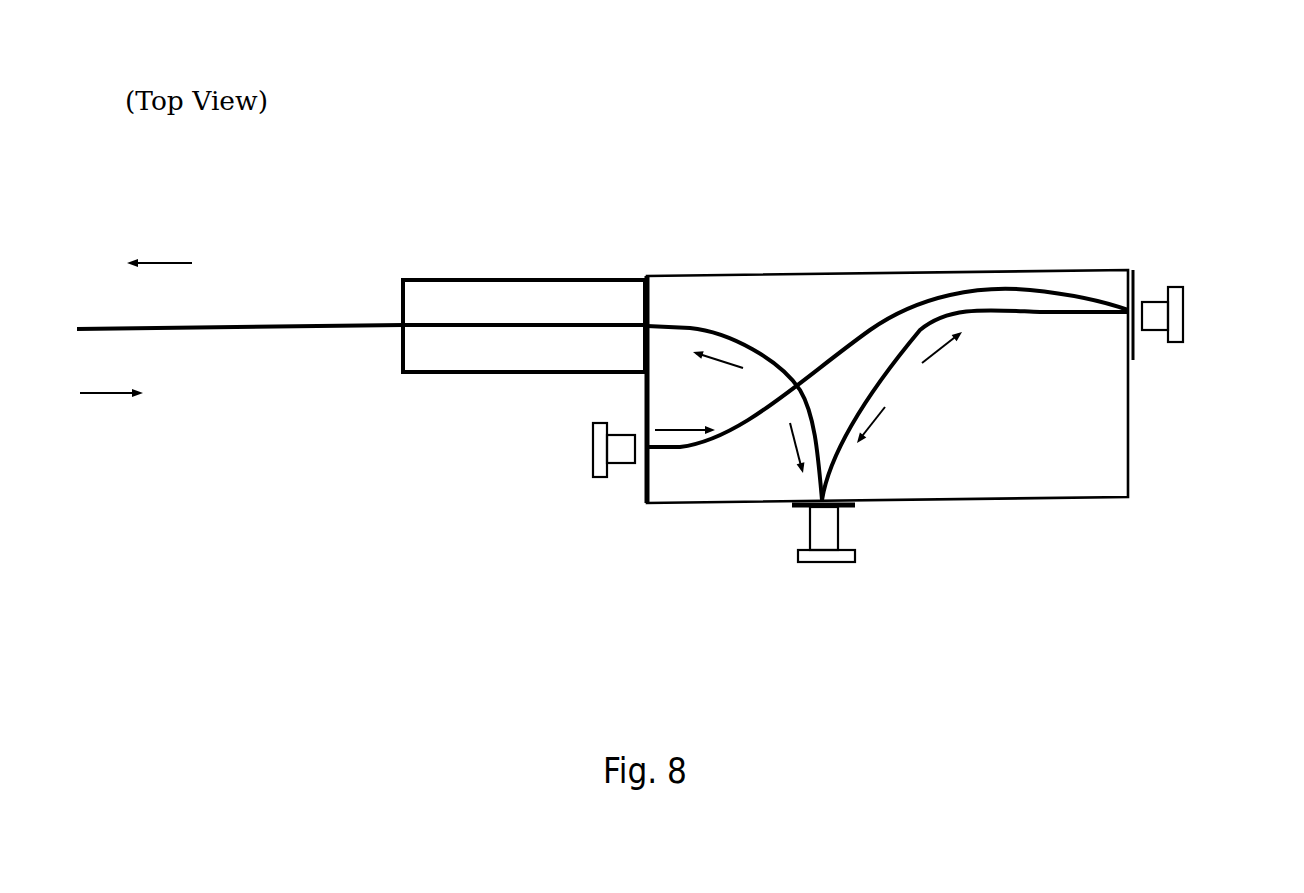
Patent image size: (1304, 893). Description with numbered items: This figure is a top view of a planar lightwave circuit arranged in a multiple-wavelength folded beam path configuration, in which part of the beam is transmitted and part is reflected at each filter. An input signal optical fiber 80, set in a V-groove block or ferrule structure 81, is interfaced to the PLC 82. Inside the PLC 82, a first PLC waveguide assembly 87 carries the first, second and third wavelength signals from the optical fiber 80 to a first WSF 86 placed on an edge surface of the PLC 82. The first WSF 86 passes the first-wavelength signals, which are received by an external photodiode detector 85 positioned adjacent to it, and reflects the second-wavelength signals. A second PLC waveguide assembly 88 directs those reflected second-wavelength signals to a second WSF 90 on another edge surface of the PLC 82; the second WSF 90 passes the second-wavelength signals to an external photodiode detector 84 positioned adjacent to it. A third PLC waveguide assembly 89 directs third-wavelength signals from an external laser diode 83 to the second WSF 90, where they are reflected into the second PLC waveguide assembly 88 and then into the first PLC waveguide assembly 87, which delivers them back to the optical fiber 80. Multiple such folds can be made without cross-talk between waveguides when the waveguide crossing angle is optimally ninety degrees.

The input signal optical fiber 80 is at (325, 333).
The V-groove block or ferrule structure 81 is at (402, 375).
The PLC 82 is at (1007, 467).
The external laser diode 83 is at (590, 458).
The external photodiode detector 84 is at (1168, 342).
The external photodiode detector 85 is at (800, 563).
The first WSF 86 is at (797, 507).
The first PLC waveguide assembly 87 is at (720, 332).
The second PLC waveguide assembly 88 is at (980, 315).
The third PLC waveguide assembly 89 is at (847, 342).
The second WSF 90 is at (1135, 280).